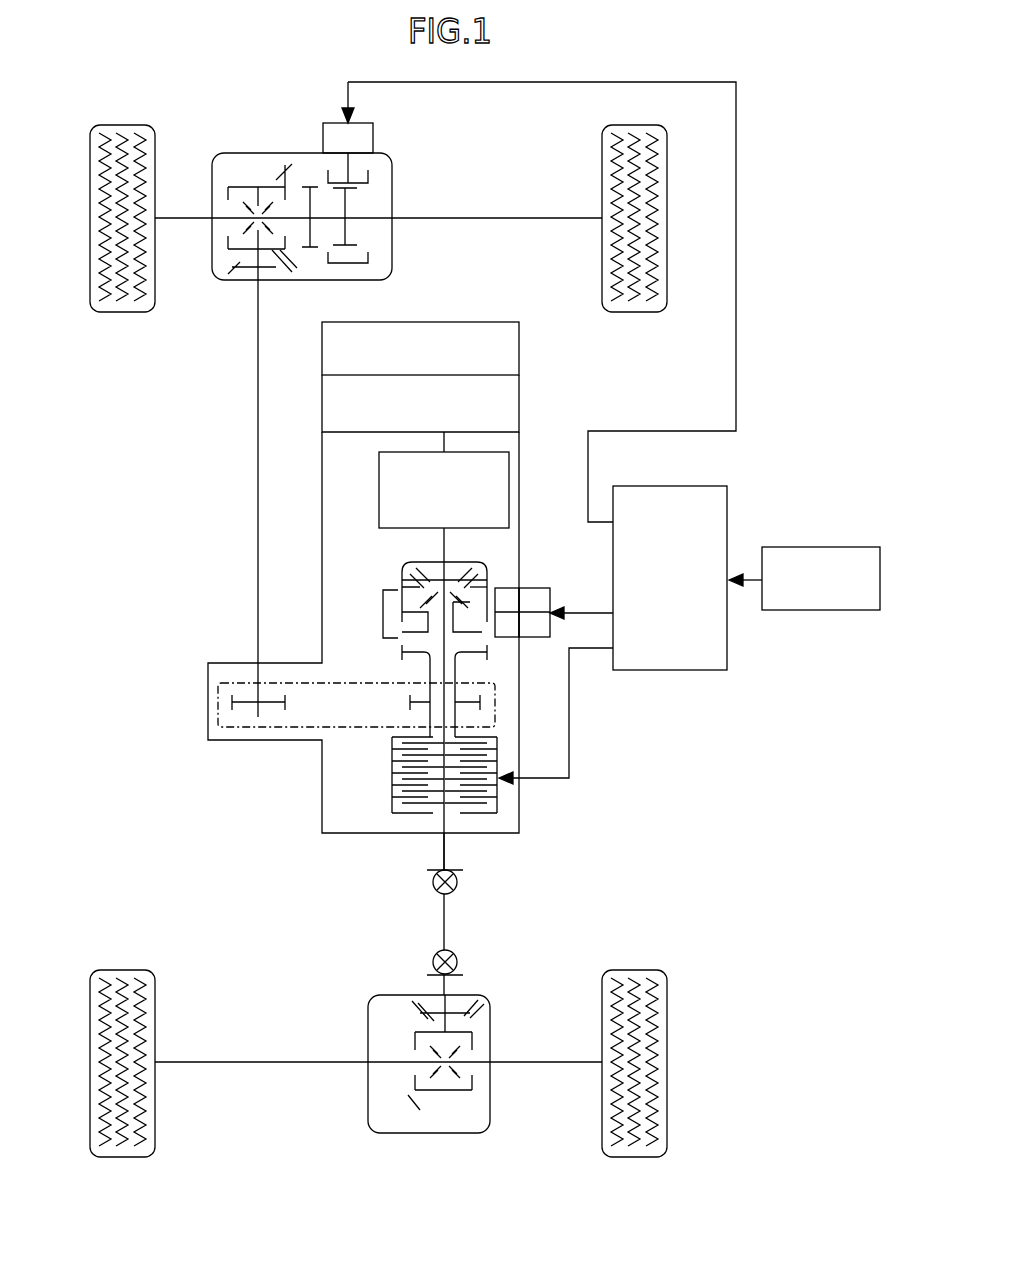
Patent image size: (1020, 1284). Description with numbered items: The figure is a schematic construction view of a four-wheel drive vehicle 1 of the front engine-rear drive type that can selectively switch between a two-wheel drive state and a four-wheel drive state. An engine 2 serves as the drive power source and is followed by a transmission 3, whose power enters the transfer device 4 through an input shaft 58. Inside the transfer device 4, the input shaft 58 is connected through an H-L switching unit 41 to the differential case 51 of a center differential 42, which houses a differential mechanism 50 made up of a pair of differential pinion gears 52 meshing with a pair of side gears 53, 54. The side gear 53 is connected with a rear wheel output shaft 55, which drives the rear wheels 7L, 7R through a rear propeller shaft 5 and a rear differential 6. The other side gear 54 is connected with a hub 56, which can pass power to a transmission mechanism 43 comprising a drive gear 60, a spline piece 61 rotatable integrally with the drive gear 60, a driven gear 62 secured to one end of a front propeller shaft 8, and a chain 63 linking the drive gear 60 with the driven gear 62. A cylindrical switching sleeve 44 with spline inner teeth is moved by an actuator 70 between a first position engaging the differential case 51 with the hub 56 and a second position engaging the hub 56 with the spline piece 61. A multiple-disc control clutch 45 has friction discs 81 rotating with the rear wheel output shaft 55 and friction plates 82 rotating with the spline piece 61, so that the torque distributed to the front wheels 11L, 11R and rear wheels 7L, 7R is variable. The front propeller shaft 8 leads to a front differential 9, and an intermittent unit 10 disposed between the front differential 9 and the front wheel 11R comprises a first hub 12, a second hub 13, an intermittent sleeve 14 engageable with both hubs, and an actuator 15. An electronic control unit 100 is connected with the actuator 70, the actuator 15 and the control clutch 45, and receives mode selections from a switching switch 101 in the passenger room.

The four-wheel drive vehicle 1 is at (568, 66).
The engine 2 is at (457, 322).
The transmission 3 is at (322, 408).
The transfer device 4 is at (312, 614).
The rear propeller shaft 5 is at (447, 925).
The rear differential 6 is at (490, 1023).
The left rear wheel 7L is at (90, 1014).
The right rear wheel 7R is at (668, 1011).
The front propeller shaft 8 is at (258, 569).
The front differential 9 is at (245, 160).
The intermittent unit 10 is at (384, 182).
The left front wheel 11L is at (90, 166).
The right front wheel 11R is at (668, 167).
The first hub 12 is at (310, 186).
The second hub 13 is at (348, 205).
The intermittent sleeve 14 is at (362, 173).
The actuator 15 is at (365, 125).
The H-L switching unit 41 is at (478, 452).
The center differential 42 is at (366, 562).
The transmission mechanism 43 is at (392, 663).
The switching sleeve 44 is at (505, 590).
The control clutch 45 is at (470, 739).
The differential mechanism 50 is at (397, 566).
The differential case 51 is at (487, 566).
The differential pinion gears 52 is at (408, 590).
The side gear 53 is at (454, 570).
The side gear 54 is at (467, 617).
The rear wheel output shaft 55 is at (448, 847).
The hub 56 is at (492, 640).
The input shaft 58 is at (444, 544).
The drive gear 60 is at (481, 703).
The spline piece 61 is at (490, 656).
The driven gear 62 is at (290, 712).
The chain 63 is at (348, 728).
The actuator 70 is at (551, 604).
The friction discs 81 is at (488, 745).
The friction plates 82 is at (470, 800).
The electronic control unit 100 is at (673, 486).
The switching switch 101 is at (820, 547).